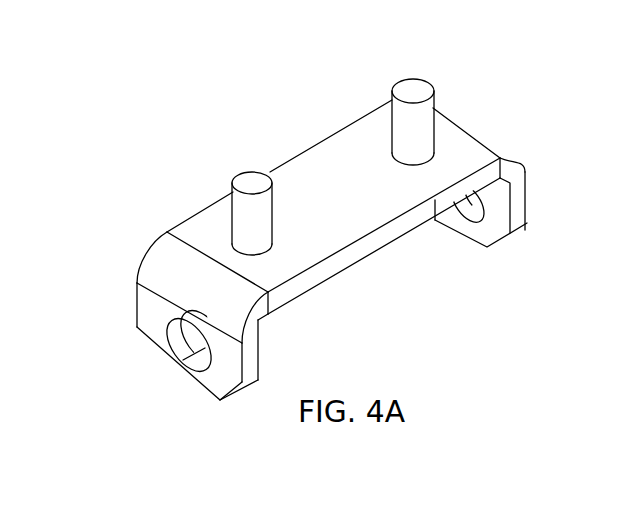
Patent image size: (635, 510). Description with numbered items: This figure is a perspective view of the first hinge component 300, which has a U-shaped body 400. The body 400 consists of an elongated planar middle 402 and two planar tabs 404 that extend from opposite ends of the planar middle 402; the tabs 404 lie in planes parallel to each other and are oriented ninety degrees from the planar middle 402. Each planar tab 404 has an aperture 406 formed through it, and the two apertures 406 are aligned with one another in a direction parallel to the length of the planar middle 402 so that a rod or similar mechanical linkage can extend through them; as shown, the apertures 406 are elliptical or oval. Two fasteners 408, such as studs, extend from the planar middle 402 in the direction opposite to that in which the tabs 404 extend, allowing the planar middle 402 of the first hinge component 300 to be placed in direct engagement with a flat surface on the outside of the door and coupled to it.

The first hinge component 300 is at (280, 132).
The U-shaped body 400 is at (322, 170).
The planar middle 402 is at (347, 258).
The planar tabs 404 is at (223, 385).
The aperture 406 is at (187, 335).
The fasteners 408 is at (248, 217).